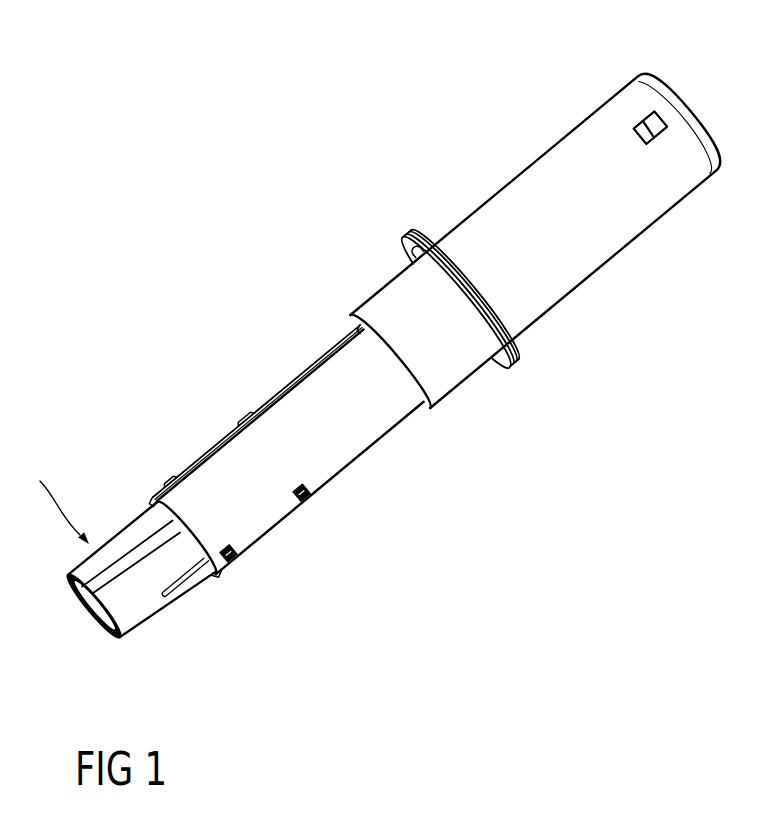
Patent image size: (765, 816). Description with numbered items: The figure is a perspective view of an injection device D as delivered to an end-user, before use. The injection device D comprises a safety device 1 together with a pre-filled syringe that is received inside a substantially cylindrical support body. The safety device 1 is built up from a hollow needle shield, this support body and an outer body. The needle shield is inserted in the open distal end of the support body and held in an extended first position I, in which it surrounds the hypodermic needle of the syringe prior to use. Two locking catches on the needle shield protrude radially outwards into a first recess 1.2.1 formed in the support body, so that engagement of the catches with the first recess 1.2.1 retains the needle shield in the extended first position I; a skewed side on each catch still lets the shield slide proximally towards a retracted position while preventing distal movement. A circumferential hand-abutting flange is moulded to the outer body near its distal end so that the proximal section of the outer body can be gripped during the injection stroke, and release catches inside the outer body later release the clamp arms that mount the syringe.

The safety device 1 is at (386, 356).
The first recess 1.2.1 is at (228, 553).
The injection device D is at (216, 75).
The extended first position I is at (59, 495).